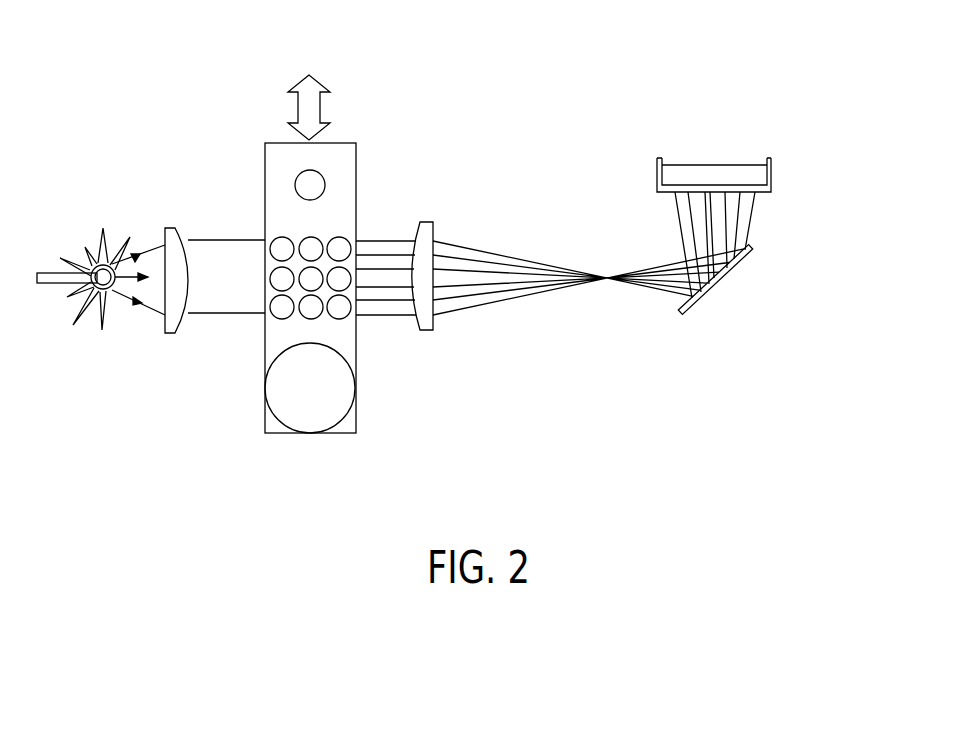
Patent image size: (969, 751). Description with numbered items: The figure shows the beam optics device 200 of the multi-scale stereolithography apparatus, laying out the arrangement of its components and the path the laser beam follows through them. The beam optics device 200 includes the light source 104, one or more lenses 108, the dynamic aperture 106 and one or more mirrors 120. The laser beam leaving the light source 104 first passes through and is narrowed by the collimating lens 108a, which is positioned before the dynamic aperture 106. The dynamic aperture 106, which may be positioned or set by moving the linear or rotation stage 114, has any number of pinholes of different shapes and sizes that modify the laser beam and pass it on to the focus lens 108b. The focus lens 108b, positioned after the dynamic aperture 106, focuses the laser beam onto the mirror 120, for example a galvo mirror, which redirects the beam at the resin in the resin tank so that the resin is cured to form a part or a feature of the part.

The beam optics device 200 is at (137, 83).
The light source 104 is at (43, 283).
The collimating lens 108a is at (170, 230).
The linear or rotation stage 114 is at (320, 108).
The dynamic aperture 106 is at (336, 433).
The focus lens 108b is at (427, 232).
The lenses 108 is at (771, 184).
The mirror 120 is at (688, 316).